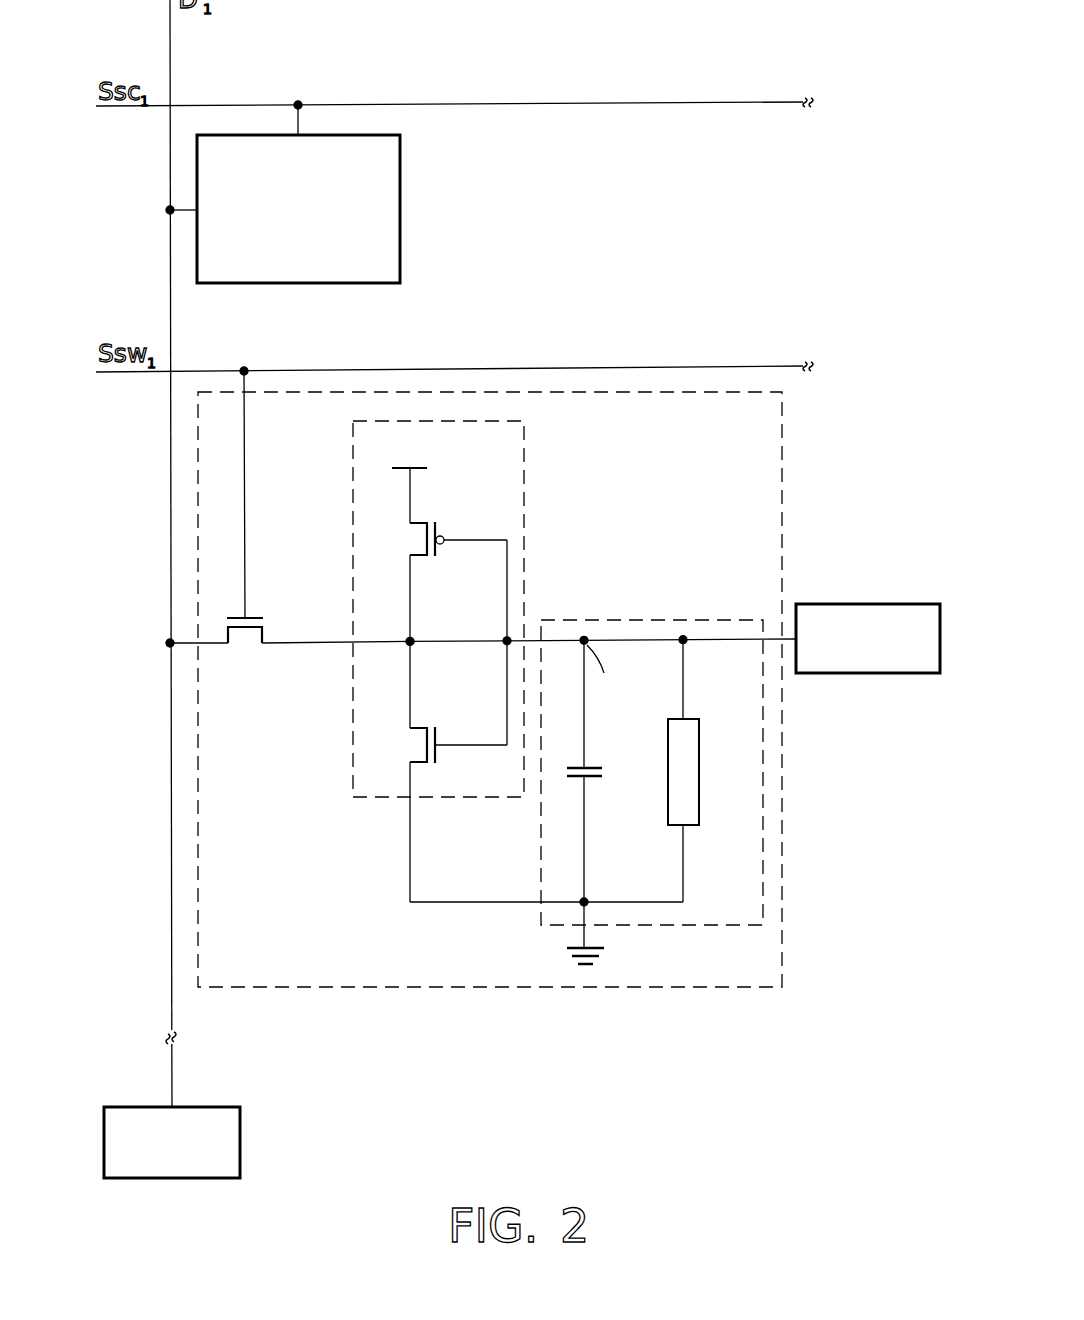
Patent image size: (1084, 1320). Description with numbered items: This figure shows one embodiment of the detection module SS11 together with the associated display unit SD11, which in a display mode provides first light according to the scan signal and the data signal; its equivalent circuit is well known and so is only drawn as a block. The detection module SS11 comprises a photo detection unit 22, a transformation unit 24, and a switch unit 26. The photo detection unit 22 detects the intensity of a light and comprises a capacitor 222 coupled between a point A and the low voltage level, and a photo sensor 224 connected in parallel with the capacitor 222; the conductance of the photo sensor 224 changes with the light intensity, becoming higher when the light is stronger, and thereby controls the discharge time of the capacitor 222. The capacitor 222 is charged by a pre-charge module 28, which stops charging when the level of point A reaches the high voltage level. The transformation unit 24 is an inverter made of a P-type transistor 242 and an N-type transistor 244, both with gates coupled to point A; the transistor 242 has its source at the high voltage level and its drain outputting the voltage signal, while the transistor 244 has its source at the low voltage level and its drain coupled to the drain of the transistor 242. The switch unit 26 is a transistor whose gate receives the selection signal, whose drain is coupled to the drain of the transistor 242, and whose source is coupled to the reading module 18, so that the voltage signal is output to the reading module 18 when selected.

The reading module 18 is at (242, 1143).
The photo detection unit 22 is at (655, 620).
The capacitor 222 is at (608, 771).
The photo sensor 224 is at (689, 718).
The transformation unit 24 is at (475, 661).
The transistor 242 is at (458, 554).
The transistor 244 is at (458, 731).
The switch unit 26 is at (245, 648).
The pre-charge module 28 is at (872, 604).
The display unit SD11 is at (298, 284).
The detection module SS11 is at (709, 988).